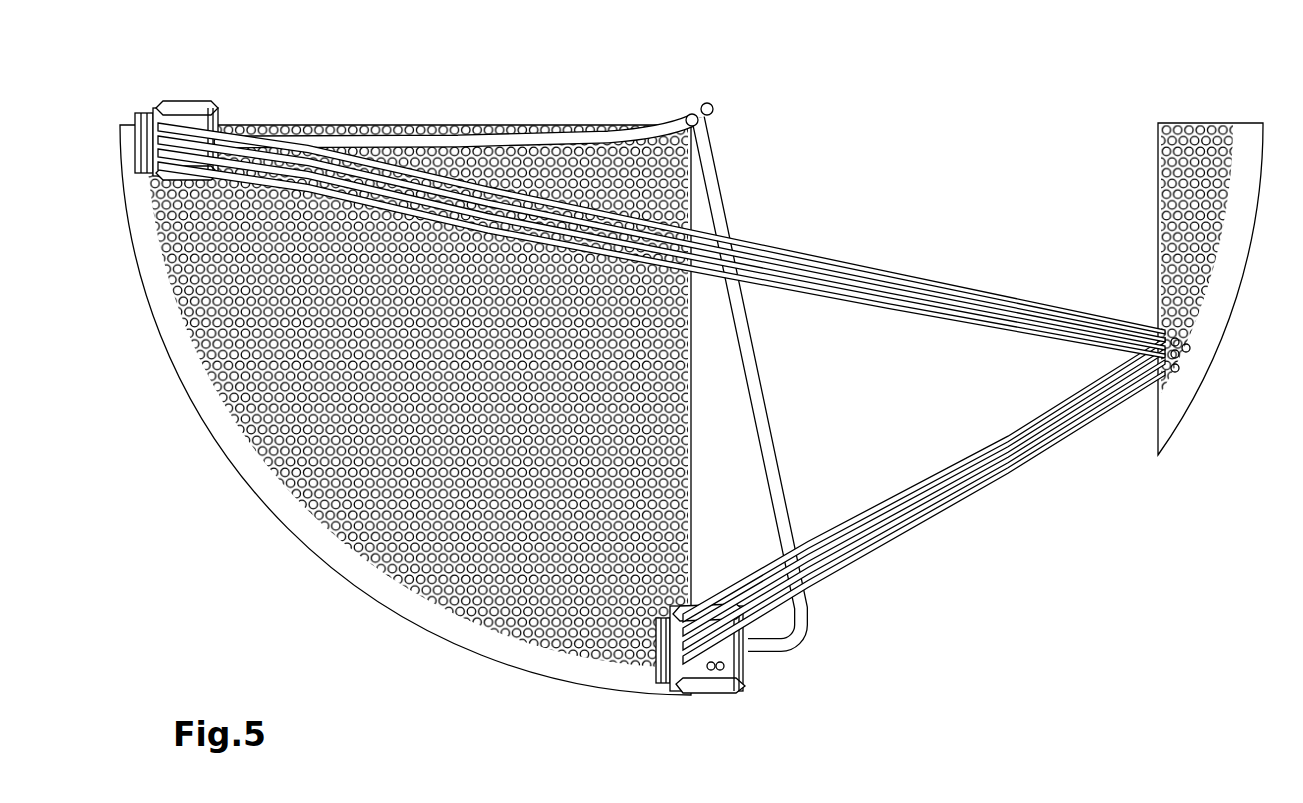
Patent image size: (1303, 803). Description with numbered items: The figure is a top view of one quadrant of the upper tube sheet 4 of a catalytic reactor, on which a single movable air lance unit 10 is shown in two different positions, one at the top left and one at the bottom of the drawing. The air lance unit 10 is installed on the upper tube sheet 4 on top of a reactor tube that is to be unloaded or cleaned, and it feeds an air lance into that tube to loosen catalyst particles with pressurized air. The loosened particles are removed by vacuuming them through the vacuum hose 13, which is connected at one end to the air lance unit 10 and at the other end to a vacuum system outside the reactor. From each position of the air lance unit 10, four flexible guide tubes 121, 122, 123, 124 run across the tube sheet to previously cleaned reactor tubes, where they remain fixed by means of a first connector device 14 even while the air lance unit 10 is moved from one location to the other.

The upper tube sheet 4 is at (256, 517).
The air lance unit 10 is at (203, 88).
The vacuum hose 13 is at (475, 130).
The first connector device 14 is at (1168, 373).
The flexible guide tube 121 is at (999, 290).
The flexible guide tube 122 is at (963, 298).
The flexible guide tube 123 is at (977, 312).
The flexible guide tube 124 is at (1008, 333).